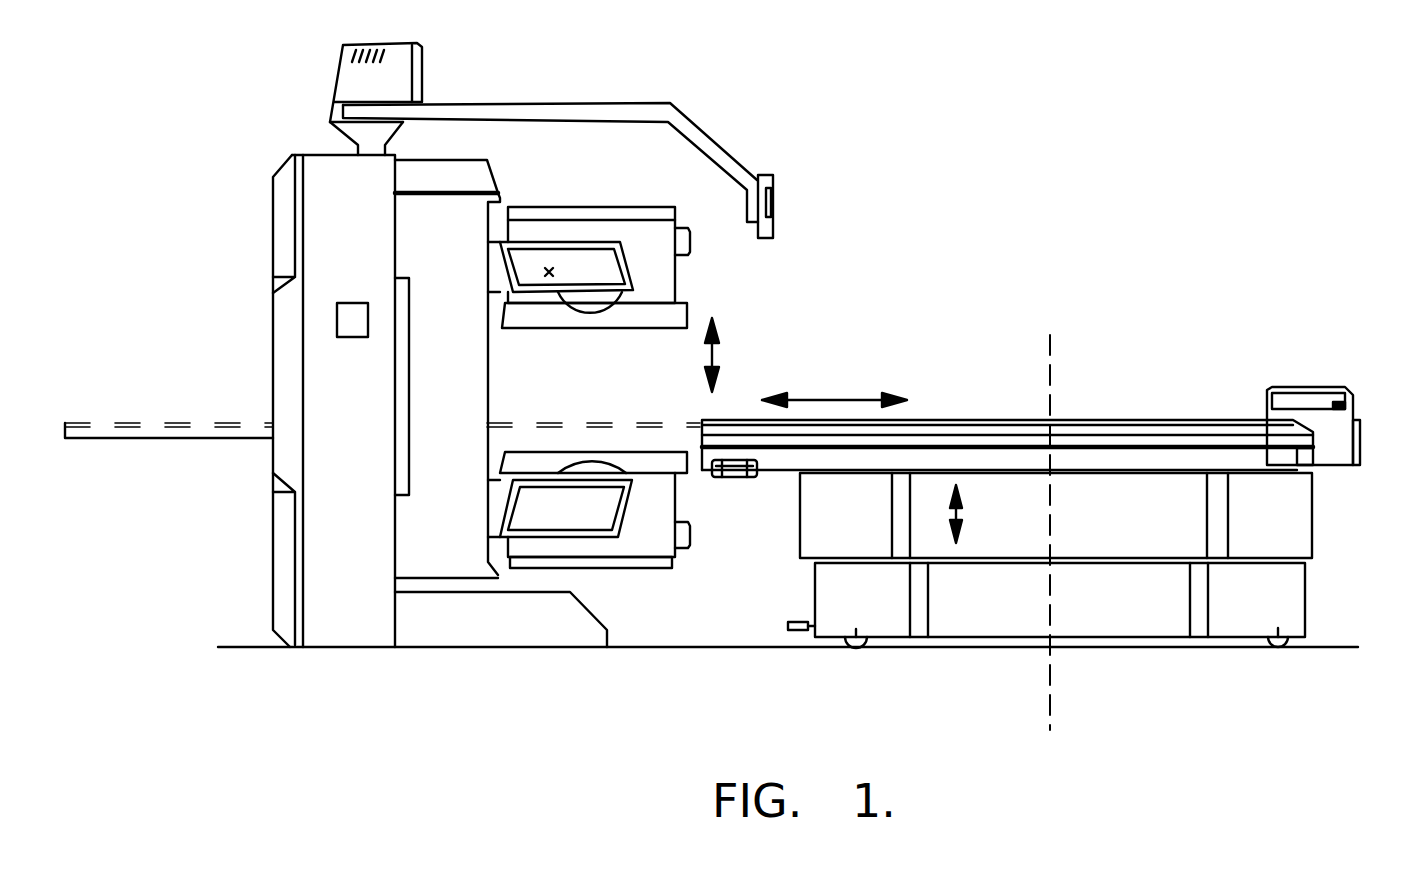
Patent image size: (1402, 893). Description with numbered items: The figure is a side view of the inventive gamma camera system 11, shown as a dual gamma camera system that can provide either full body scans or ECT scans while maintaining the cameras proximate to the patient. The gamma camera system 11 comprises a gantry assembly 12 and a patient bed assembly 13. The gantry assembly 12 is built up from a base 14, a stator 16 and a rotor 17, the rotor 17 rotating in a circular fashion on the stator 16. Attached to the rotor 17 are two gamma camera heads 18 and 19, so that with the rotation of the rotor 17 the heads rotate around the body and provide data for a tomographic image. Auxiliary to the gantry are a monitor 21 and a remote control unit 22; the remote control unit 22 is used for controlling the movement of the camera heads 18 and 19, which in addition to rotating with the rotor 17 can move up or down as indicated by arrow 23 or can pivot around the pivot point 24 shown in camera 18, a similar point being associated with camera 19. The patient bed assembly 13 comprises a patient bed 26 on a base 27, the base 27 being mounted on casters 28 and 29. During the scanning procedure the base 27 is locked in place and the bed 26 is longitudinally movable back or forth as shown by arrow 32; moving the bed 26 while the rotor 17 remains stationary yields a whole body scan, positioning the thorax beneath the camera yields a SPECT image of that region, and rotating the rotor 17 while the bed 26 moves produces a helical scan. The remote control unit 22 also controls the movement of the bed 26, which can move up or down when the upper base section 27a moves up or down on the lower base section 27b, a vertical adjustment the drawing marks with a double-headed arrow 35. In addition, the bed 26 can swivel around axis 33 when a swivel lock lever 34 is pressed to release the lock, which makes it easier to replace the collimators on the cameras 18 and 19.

The gamma camera system 11 is at (1118, 150).
The gantry assembly 12 is at (236, 150).
The patient bed assembly 13 is at (113, 422).
The base 14 is at (508, 633).
The stator 16 is at (330, 413).
The rotor 17 is at (455, 208).
The gamma camera head 18 is at (617, 198).
The gamma camera head 19 is at (665, 570).
The monitor 21 is at (407, 68).
The remote control unit 22 is at (773, 180).
The arrow 23 is at (713, 352).
The pivot point 24 is at (551, 268).
The patient bed 26 is at (1100, 415).
The base 27 is at (1340, 551).
The upper base section 27a is at (1122, 533).
The lower base section 27b is at (1122, 618).
The caster 28 is at (858, 643).
The caster 29 is at (1276, 644).
The arrow 32 is at (830, 398).
The axis 33 is at (1056, 350).
The swivel lock lever 34 is at (800, 620).
The vertical adjustment arrow 35 is at (984, 514).